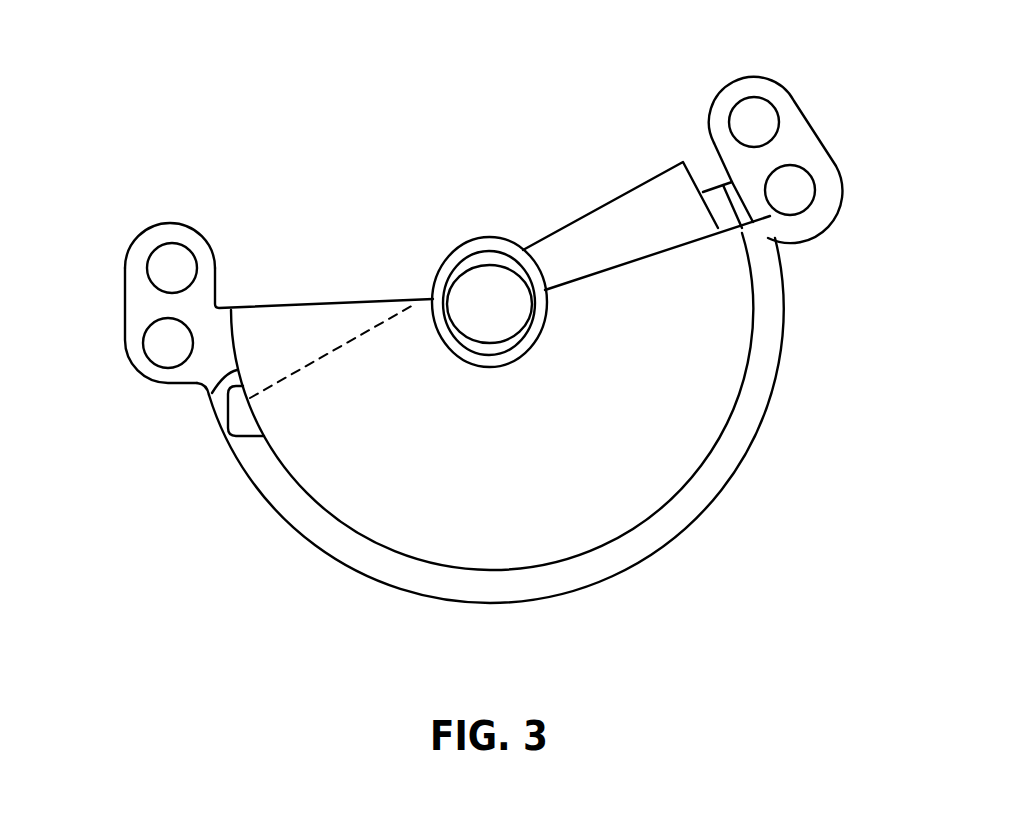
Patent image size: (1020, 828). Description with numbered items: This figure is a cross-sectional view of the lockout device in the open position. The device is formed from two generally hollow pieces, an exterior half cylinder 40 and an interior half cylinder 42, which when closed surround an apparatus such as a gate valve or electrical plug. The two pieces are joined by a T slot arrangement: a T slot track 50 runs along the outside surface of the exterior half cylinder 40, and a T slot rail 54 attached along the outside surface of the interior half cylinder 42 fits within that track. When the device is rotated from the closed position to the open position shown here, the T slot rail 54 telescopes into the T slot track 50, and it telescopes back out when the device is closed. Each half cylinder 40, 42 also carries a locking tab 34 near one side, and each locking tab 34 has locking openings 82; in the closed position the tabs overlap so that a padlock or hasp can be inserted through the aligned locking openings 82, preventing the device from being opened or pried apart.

The locking tab 34 is at (143, 305).
The exterior half cylinder 40 is at (383, 353).
The interior half cylinder 42 is at (570, 247).
The T slot track 50 is at (745, 412).
The T slot rail 54 is at (742, 232).
The locking opening 82 is at (172, 268).